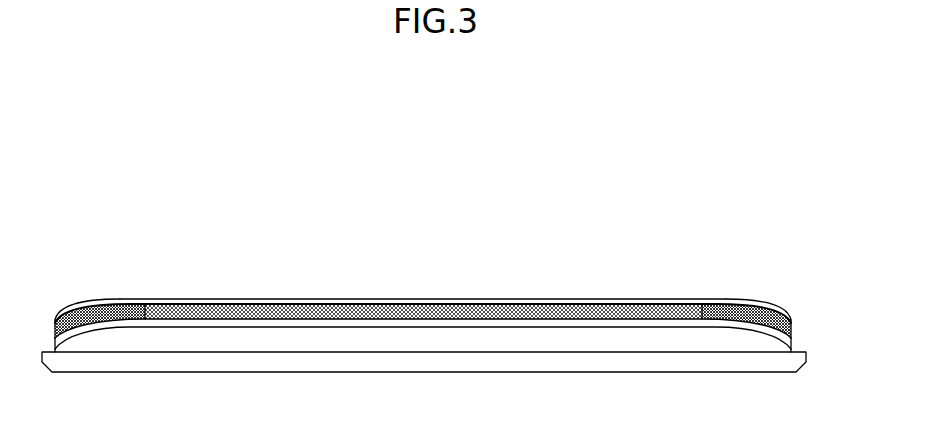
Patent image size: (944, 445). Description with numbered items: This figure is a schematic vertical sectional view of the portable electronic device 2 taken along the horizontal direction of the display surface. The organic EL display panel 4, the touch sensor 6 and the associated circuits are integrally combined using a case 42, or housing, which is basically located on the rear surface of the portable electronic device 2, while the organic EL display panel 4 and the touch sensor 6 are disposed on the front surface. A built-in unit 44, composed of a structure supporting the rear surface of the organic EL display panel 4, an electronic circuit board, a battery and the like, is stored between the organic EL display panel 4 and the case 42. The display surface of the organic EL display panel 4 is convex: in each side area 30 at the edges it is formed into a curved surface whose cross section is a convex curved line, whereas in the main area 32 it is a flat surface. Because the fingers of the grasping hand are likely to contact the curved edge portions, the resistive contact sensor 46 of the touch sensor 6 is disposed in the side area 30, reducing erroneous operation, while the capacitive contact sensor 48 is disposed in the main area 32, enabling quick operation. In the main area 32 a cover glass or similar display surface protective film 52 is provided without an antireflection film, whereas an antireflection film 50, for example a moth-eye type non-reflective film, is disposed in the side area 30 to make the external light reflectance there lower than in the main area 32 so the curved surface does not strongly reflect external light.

The portable electronic device 2 is at (434, 291).
The organic EL display panel 4 is at (423, 327).
The touch sensor 6 is at (475, 300).
The side area 30 is at (143, 215).
The main area 32 is at (423, 246).
The case 42 is at (662, 360).
The built-in unit 44 is at (577, 345).
The resistive contact sensor 46 is at (77, 302).
The capacitive contact sensor 48 is at (600, 304).
The antireflection film 50 is at (102, 299).
The display surface protective film 52 is at (549, 298).